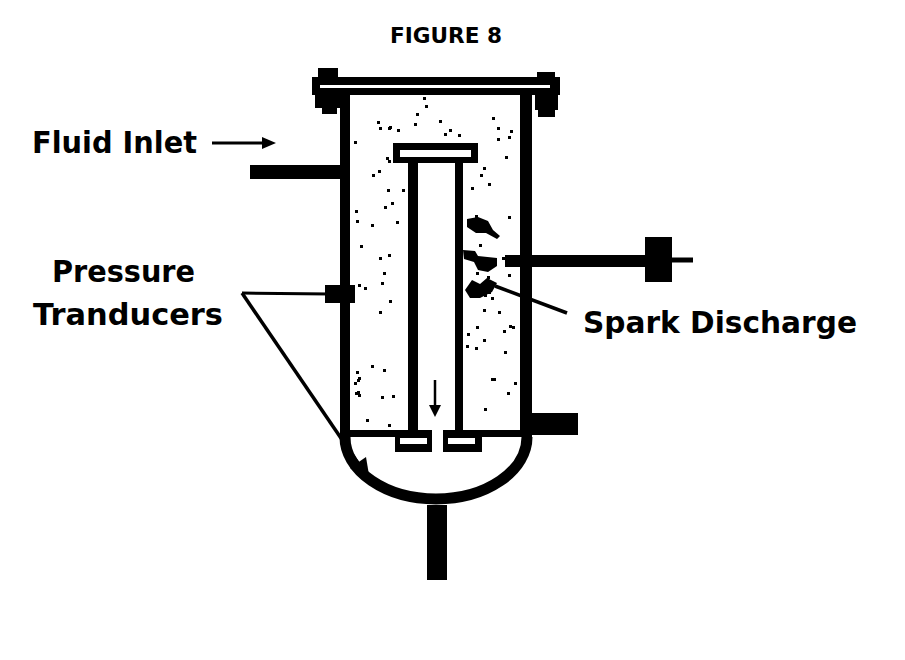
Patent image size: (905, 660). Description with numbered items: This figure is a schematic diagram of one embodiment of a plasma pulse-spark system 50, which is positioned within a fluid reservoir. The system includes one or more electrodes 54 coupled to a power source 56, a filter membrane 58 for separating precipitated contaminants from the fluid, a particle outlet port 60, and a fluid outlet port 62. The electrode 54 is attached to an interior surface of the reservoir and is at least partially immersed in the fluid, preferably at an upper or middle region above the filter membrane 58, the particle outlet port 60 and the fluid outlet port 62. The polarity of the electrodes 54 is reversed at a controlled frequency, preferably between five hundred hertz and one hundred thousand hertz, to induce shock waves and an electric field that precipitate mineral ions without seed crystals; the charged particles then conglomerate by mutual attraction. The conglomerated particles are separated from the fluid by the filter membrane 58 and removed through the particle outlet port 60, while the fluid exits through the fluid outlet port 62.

The plasma pulse-spark system 50 is at (552, 231).
The electrode 54 is at (532, 255).
The power source 56 is at (692, 260).
The filter membrane 58 is at (463, 195).
The particle outlet port 60 is at (587, 425).
The fluid outlet port 62 is at (458, 520).